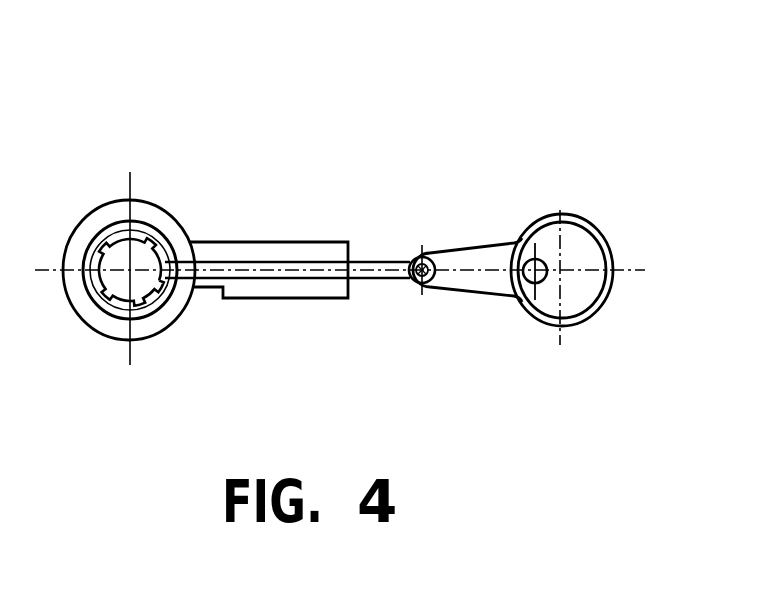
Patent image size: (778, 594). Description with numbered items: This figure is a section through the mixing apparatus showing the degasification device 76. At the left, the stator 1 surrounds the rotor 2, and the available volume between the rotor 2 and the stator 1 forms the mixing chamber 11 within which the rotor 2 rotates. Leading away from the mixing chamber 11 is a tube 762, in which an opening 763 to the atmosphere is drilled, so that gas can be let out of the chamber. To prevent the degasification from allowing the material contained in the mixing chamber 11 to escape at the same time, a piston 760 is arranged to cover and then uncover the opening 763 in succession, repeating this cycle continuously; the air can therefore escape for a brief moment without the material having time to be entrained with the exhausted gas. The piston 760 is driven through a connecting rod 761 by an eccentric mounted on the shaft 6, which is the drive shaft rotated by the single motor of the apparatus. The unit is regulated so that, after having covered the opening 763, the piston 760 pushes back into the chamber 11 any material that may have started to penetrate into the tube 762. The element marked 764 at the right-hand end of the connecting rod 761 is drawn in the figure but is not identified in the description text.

The degasification device 76 is at (390, 72).
The stator 1 is at (85, 248).
The rotor 2 is at (107, 257).
The mixing chamber 11 is at (152, 250).
The tube 762 is at (222, 261).
The opening 763 is at (214, 288).
The piston 760 is at (373, 261).
The connecting rod 761 is at (484, 260).
The knob 764 is at (575, 257).
The shaft 6 is at (540, 284).